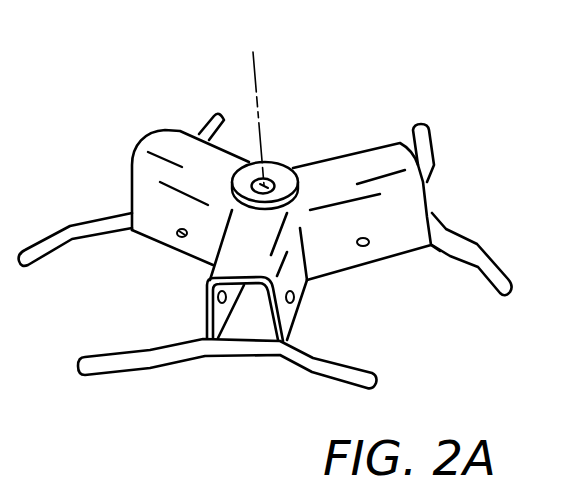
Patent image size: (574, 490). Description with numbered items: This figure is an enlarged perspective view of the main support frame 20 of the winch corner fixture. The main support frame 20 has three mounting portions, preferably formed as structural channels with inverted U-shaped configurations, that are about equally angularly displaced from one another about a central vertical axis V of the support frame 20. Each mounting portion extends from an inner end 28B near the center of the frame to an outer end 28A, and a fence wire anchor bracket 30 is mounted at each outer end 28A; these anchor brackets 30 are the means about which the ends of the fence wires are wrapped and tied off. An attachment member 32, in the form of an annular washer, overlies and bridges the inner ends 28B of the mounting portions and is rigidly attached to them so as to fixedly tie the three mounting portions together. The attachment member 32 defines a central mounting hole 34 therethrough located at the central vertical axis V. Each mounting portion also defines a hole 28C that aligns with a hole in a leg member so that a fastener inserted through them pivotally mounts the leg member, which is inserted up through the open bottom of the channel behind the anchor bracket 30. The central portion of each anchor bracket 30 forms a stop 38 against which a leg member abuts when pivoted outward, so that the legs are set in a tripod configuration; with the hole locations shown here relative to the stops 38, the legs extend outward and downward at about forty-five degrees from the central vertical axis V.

The main support frame 20 is at (336, 92).
The outer end of mounting portion 28A is at (155, 143).
The inner end of mounting portion 28B is at (248, 160).
The hole in mounting portion 28C is at (177, 236).
The fence wire anchor bracket 30 is at (52, 233).
The attachment member 32 is at (266, 184).
The central mounting hole 34 is at (268, 180).
The stop 38 is at (243, 357).
The central vertical axis V is at (261, 95).